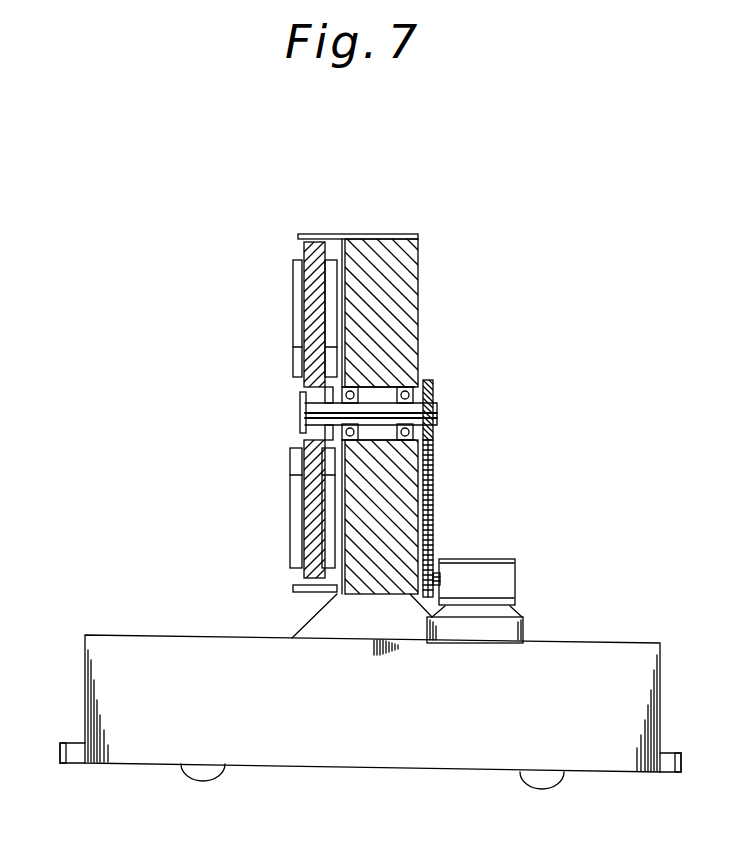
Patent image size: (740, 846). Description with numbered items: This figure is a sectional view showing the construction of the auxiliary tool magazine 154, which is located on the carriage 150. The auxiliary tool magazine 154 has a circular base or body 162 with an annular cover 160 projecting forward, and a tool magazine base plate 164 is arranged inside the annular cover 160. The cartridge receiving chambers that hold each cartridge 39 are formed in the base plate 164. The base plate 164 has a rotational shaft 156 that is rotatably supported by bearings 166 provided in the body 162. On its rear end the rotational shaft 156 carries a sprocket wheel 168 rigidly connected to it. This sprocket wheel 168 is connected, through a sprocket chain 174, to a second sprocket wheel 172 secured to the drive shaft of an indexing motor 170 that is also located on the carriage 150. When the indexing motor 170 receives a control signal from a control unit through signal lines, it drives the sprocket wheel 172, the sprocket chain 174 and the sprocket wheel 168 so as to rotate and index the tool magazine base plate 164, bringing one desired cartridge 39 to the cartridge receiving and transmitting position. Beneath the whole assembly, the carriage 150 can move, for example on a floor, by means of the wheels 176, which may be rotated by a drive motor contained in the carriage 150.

The cartridge 39 is at (290, 530).
The carriage 150 is at (100, 697).
The auxiliary tool magazine 154 is at (284, 300).
The rotational shaft 156 is at (302, 414).
The annular cover 160 is at (320, 234).
The circular base 162 is at (405, 265).
The tool magazine base plate 164 is at (314, 270).
The bearings 166 is at (405, 388).
The sprocket wheel 168 is at (433, 386).
The indexing motor 170 is at (505, 586).
The sprocket wheel 172 is at (438, 570).
The sprocket chain 174 is at (433, 478).
The wheels 176 is at (215, 770).